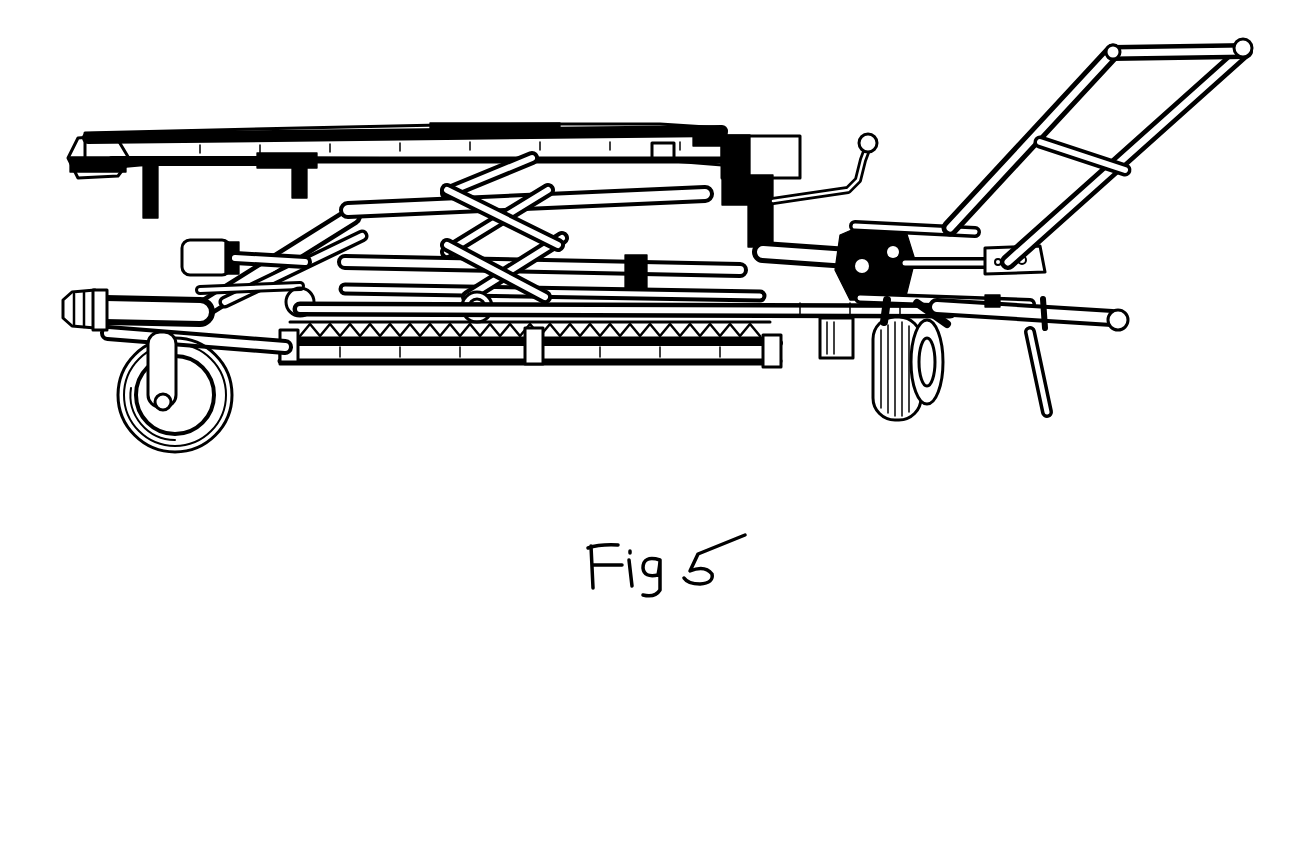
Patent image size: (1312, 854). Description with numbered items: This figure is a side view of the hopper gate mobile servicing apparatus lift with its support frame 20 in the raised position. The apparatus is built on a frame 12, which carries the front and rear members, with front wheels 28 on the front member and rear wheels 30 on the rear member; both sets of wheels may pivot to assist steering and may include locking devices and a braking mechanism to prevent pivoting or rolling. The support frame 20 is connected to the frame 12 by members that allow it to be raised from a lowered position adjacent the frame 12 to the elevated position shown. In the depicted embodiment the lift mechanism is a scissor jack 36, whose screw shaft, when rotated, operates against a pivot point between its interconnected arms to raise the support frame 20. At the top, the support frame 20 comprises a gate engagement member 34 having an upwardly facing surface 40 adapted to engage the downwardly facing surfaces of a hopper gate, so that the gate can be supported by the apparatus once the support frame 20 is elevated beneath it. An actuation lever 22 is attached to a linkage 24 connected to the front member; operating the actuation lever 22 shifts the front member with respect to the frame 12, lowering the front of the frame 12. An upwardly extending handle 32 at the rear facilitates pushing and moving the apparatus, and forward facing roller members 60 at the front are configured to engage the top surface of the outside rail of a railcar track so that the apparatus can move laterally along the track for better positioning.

The frame 12 is at (498, 385).
The support frame 20 is at (658, 112).
The actuation lever 22 is at (880, 152).
The linkage 24 is at (1095, 350).
The front wheels 28 is at (217, 435).
The rear wheels 30 is at (917, 430).
The upwardly extending handle 32 is at (1212, 95).
The gate engagement member 34 is at (532, 104).
The scissor jack 36 is at (570, 236).
The upwardly facing surface 40 is at (185, 247).
The forward facing roller members 60 is at (57, 335).